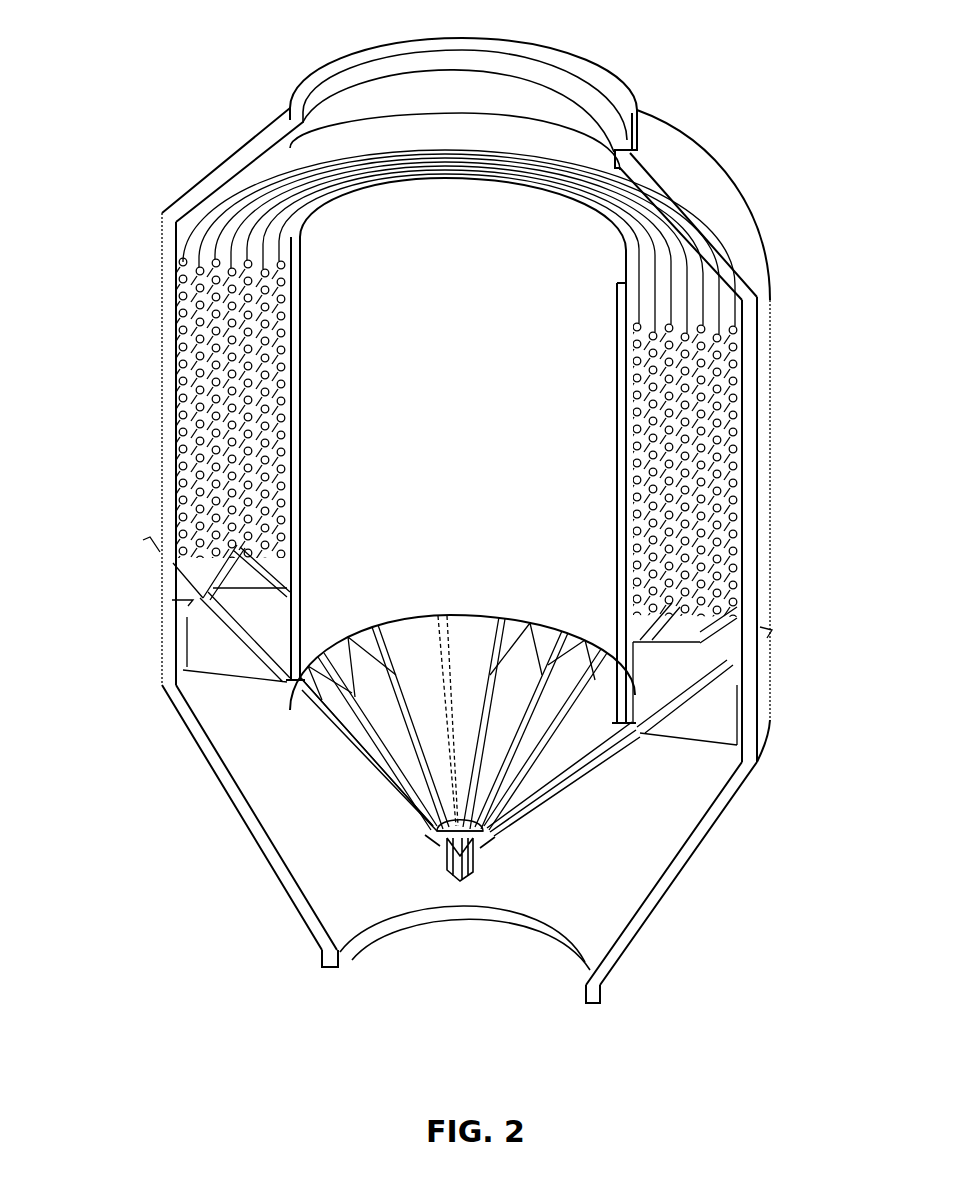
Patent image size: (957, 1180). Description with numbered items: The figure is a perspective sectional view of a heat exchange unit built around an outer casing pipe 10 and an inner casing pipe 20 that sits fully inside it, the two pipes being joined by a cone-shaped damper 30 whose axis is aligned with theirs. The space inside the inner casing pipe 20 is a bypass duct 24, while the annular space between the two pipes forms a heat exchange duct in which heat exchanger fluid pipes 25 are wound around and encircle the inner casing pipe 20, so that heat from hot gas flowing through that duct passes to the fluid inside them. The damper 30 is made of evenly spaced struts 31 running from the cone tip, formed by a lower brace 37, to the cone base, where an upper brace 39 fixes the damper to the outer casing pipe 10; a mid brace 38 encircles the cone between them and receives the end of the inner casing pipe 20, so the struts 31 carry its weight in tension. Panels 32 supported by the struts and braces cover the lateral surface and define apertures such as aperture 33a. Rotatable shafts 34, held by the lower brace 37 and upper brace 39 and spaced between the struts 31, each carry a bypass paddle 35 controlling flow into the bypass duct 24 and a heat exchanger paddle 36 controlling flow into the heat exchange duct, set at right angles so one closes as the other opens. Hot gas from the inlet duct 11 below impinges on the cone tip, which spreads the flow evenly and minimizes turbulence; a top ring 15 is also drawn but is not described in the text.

The outer casing pipe 10 is at (166, 338).
The inlet duct 11 is at (528, 922).
The top inlet ring 15 is at (338, 66).
The inner casing pipe 20 is at (315, 214).
The bypass duct 24 is at (476, 412).
The heat exchanger fluid pipe 25 is at (190, 250).
The damper 30 is at (560, 797).
The strut 31 is at (437, 655).
The panel 32 is at (422, 628).
The aperture 33a is at (410, 640).
The shaft 34 is at (367, 767).
The bypass paddle 35 is at (413, 667).
The heat exchanger paddle 36 is at (230, 660).
The lower brace 37 is at (445, 867).
The mid brace 38 is at (637, 730).
The upper brace 39 is at (818, 662).